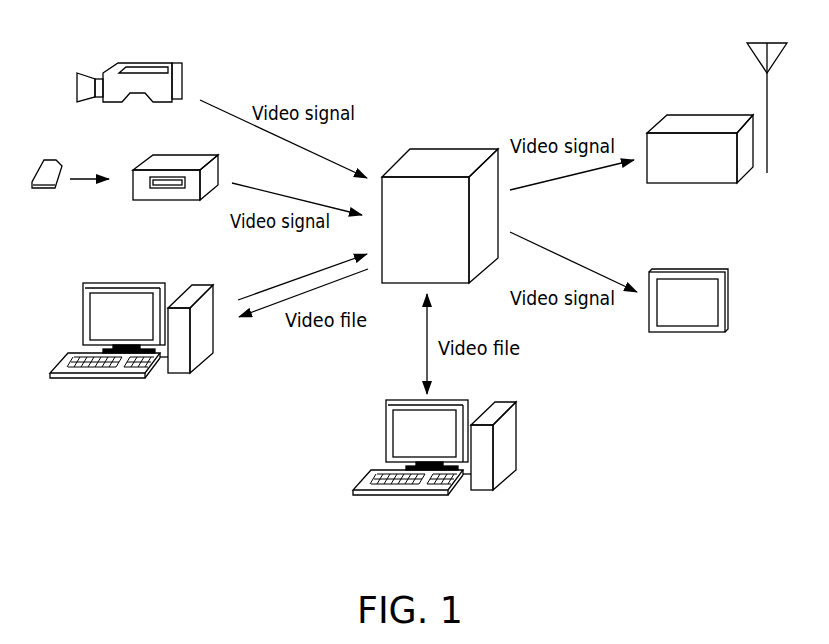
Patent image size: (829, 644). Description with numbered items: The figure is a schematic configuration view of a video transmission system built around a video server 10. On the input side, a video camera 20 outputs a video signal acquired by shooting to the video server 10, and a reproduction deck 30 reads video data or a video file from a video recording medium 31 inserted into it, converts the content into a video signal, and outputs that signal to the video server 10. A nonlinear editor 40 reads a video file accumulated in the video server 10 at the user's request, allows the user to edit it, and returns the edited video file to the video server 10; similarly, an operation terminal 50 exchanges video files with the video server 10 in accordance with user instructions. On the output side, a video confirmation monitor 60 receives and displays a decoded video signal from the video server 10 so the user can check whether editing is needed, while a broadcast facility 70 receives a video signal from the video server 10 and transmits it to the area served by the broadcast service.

The video server 10 is at (447, 148).
The video camera 20 is at (149, 58).
The reproduction deck 30 is at (165, 201).
The video recording medium 31 is at (43, 190).
The nonlinear editor 40 is at (120, 378).
The operation terminal 50 is at (435, 497).
The video confirmation monitor 60 is at (697, 334).
The broadcast facility 70 is at (703, 113).